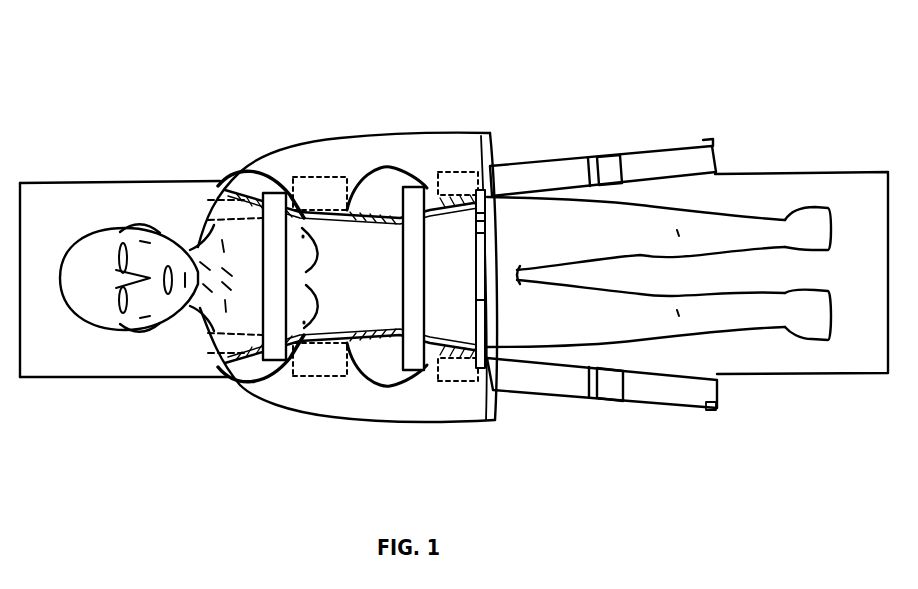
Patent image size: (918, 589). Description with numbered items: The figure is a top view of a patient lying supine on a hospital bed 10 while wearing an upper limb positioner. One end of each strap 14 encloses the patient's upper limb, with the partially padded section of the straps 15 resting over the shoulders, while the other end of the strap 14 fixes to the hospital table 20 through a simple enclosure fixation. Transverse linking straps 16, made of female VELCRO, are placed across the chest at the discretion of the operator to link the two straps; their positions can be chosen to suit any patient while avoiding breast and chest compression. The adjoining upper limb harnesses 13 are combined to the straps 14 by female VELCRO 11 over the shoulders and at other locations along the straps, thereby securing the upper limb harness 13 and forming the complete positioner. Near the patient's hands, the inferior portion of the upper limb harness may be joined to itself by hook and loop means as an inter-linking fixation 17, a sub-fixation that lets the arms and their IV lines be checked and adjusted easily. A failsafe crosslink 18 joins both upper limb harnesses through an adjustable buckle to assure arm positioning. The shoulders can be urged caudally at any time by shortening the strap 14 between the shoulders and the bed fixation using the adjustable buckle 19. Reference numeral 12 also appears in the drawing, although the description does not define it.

The hospital bed 10 is at (103, 197).
The female VELCRO 11 is at (372, 192).
The strap slot 12 is at (427, 187).
The upper limb harness 13 is at (460, 153).
The strap 14 is at (573, 177).
The partially padded section of the straps 15 is at (248, 365).
The transverse linking strap 16 is at (418, 312).
The inter-linking fixation 17 is at (458, 368).
The failsafe crosslink 18 is at (483, 230).
The adjustable buckle 19 is at (612, 380).
The hospital table 20 is at (710, 385).